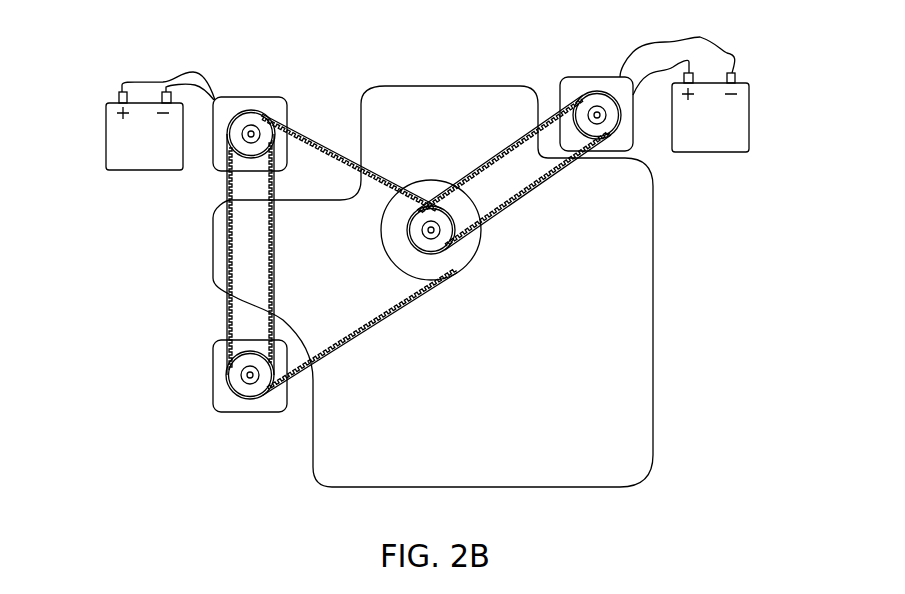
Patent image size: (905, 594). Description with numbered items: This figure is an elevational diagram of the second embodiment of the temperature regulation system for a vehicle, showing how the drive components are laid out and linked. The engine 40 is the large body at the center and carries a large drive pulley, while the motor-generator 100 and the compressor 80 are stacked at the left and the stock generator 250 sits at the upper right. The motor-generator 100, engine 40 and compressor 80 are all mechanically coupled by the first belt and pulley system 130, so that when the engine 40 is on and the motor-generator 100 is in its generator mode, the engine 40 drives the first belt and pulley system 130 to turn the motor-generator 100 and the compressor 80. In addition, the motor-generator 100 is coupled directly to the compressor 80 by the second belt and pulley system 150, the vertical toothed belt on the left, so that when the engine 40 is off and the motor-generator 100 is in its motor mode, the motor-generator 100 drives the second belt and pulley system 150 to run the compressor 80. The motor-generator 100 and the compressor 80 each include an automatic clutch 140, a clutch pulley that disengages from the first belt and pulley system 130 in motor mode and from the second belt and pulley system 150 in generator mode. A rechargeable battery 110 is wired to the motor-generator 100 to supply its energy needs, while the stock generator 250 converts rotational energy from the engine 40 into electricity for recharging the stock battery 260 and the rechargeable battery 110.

The engine 40 is at (477, 85).
The compressor 80 is at (277, 413).
The motor-generator 100 is at (227, 98).
The rechargeable battery 110 is at (106, 135).
The first belt and pulley system 130 is at (313, 127).
The automatic clutch 140 is at (253, 126).
The second belt and pulley system 150 is at (275, 248).
The stock generator 250 is at (582, 77).
The stock battery 260 is at (750, 113).